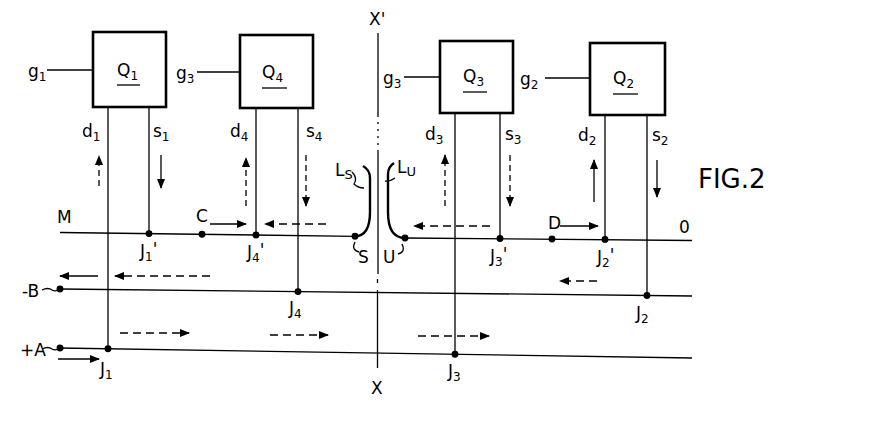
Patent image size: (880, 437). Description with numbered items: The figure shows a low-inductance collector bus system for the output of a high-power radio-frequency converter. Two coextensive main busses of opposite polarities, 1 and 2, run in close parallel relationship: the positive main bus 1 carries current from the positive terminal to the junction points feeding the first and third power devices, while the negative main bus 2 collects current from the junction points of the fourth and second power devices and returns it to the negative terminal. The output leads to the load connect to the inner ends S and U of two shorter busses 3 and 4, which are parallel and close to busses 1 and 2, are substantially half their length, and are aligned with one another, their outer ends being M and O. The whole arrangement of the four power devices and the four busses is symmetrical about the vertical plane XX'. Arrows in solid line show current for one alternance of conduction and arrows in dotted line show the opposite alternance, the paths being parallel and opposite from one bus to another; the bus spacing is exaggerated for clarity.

The main bus 1 is at (672, 360).
The main bus 2 is at (681, 298).
The bus 3 is at (94, 234).
The bus 4 is at (675, 242).